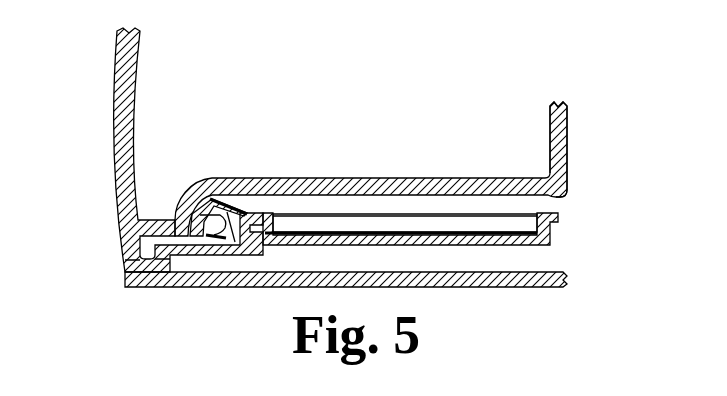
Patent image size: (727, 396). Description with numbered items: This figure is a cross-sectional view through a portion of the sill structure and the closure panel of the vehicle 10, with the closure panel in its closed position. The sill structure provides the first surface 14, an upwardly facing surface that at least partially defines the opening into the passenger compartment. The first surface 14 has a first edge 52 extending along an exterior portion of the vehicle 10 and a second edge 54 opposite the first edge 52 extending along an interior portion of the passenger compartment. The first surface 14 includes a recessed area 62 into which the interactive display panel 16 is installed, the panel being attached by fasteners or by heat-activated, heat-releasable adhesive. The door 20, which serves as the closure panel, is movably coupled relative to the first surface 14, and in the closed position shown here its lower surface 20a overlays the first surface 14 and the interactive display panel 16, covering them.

The vehicle 10 is at (414, 82).
The first surface 14 is at (282, 178).
The interactive display panel 16 is at (383, 222).
The door 20 is at (131, 82).
The lower surface 20a is at (470, 197).
The first edge 52 is at (140, 255).
The second edge 54 is at (553, 173).
The recessed area 62 is at (437, 233).